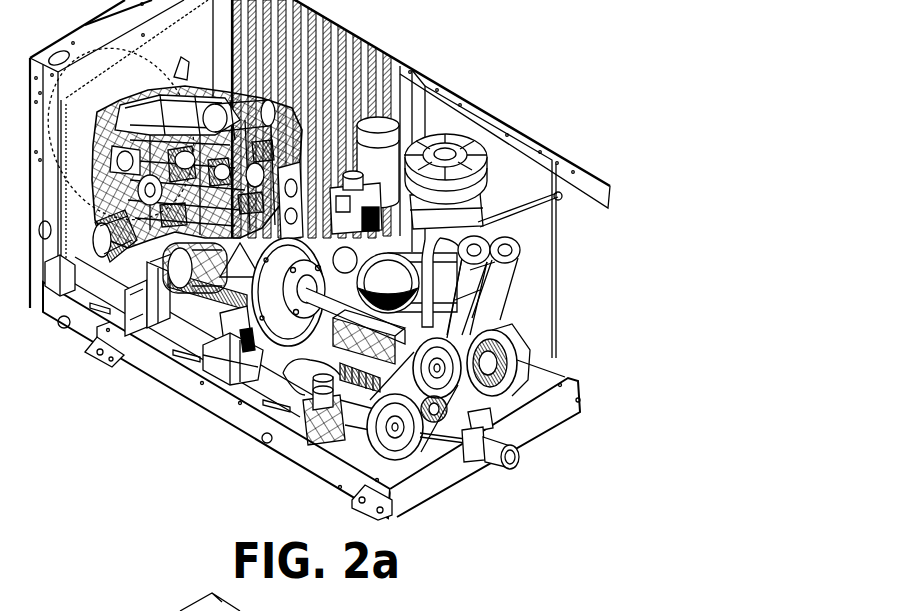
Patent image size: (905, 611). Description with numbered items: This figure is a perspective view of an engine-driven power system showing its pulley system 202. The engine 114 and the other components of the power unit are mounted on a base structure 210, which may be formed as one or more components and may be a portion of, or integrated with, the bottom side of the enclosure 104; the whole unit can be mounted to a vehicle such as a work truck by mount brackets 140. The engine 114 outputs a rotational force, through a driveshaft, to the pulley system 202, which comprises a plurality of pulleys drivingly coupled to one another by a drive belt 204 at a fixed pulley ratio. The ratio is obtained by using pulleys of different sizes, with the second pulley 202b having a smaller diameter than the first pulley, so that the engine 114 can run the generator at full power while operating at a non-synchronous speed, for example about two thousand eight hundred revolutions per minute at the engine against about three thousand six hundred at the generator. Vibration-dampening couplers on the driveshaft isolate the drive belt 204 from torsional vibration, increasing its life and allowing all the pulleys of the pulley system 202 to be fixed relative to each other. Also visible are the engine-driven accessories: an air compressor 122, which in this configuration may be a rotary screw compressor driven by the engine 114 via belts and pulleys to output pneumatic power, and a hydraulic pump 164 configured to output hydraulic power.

The enclosure 104 is at (393, 57).
The engine 114 is at (133, 122).
The air compressor 122 is at (490, 153).
The mount bracket 140 is at (99, 372).
The hydraulic pump 164 is at (503, 287).
The pulley system 202 is at (475, 410).
The second pulley 202b is at (490, 395).
The drive belt 204 is at (423, 437).
The base structure 210 is at (232, 428).